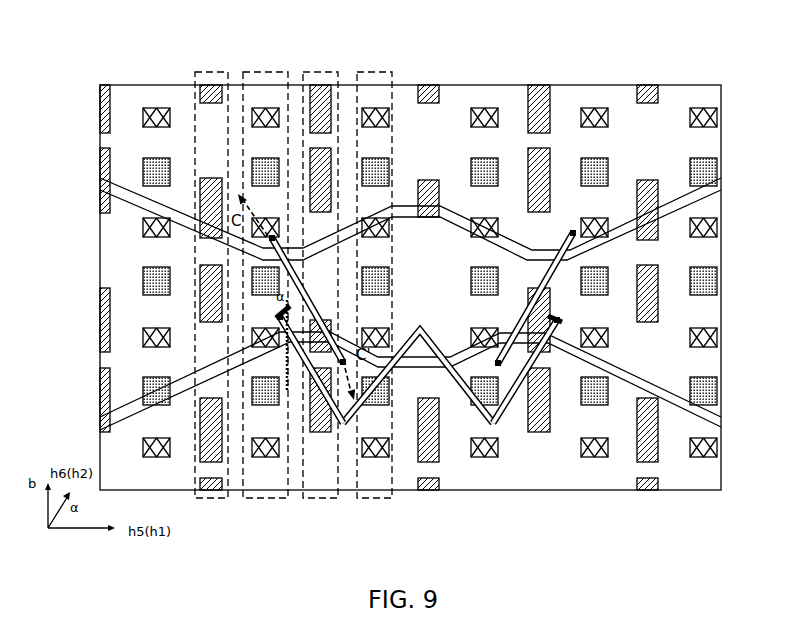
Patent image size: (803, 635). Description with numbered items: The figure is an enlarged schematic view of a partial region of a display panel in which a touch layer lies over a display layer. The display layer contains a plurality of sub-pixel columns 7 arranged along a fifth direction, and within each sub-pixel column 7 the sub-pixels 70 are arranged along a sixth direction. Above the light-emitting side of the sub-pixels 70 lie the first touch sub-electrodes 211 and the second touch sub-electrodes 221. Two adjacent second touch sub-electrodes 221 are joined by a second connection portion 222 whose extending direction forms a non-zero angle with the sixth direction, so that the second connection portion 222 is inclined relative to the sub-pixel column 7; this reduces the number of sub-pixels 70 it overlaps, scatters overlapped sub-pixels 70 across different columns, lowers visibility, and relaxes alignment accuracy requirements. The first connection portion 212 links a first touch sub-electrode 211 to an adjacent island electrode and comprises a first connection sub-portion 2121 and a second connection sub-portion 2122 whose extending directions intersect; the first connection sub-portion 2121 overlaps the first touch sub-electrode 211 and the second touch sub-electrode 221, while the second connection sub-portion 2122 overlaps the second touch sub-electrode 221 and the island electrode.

The sub-pixel column 7 is at (212, 72).
The sub-pixel 70 is at (470, 116).
The second touch sub-electrode 221 is at (592, 97).
The first touch sub-electrode 211 is at (409, 304).
The second connection portion 222 is at (262, 260).
The first connection portion 212 is at (422, 393).
The first connection sub-portion 2121 is at (320, 412).
The second connection sub-portion 2122 is at (379, 362).